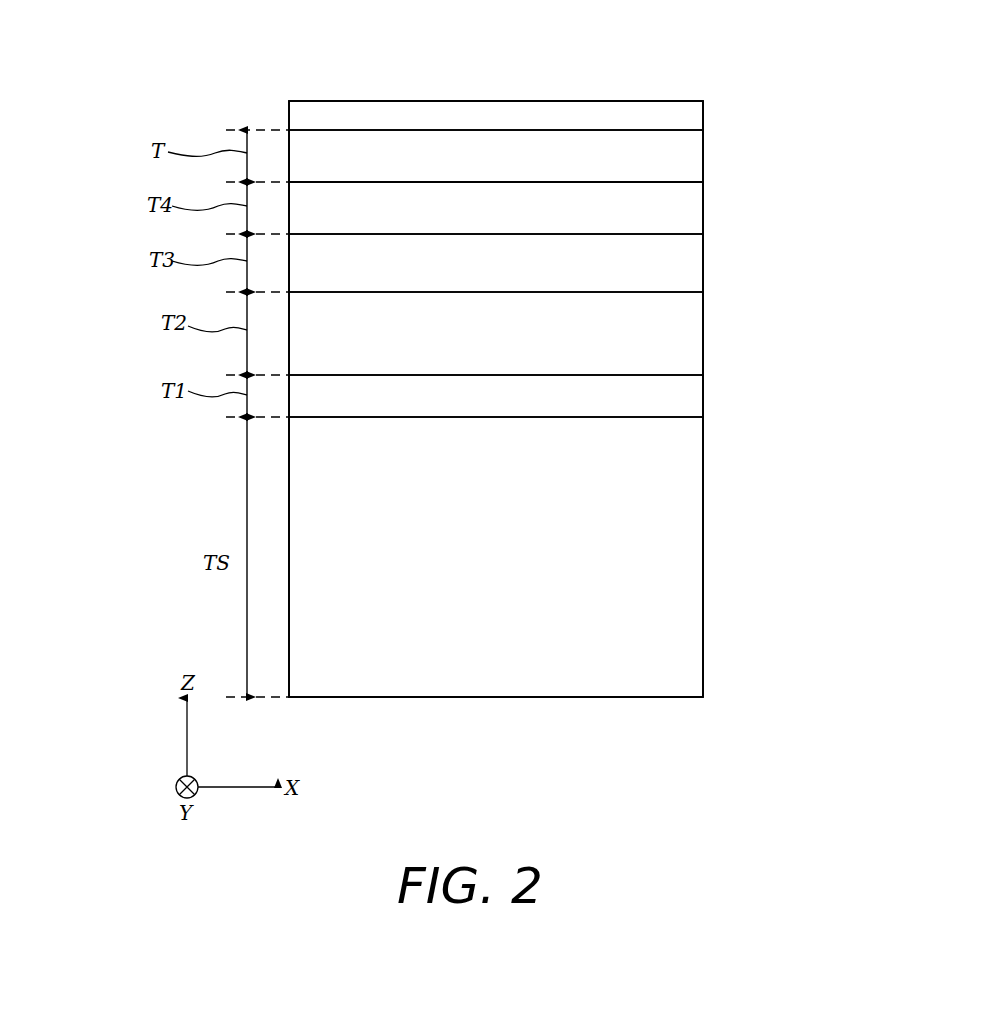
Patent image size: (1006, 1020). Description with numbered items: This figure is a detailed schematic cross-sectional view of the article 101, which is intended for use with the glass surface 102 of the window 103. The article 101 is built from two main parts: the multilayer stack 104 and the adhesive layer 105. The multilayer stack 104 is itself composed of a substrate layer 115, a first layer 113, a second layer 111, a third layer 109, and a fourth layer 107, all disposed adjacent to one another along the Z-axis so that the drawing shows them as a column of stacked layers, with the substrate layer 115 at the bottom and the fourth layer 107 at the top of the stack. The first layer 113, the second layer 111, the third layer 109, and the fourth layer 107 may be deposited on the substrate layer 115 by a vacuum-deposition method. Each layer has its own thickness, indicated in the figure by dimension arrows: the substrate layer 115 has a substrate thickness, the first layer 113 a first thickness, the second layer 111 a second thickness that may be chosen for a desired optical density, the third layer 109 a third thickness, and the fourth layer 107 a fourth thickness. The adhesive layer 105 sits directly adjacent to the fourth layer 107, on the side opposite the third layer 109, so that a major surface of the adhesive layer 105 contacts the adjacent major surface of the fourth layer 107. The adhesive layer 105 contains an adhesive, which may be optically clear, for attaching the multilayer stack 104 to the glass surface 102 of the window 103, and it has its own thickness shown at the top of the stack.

The article 101 is at (857, 128).
The glass surface 102 is at (615, 130).
The window 103 is at (496, 115).
The multilayer stack 104 is at (743, 182).
The adhesive layer 105 is at (496, 156).
The fourth layer 107 is at (496, 208).
The third layer 109 is at (496, 263).
The second layer 111 is at (496, 333).
The first layer 113 is at (496, 396).
The substrate layer 115 is at (496, 557).